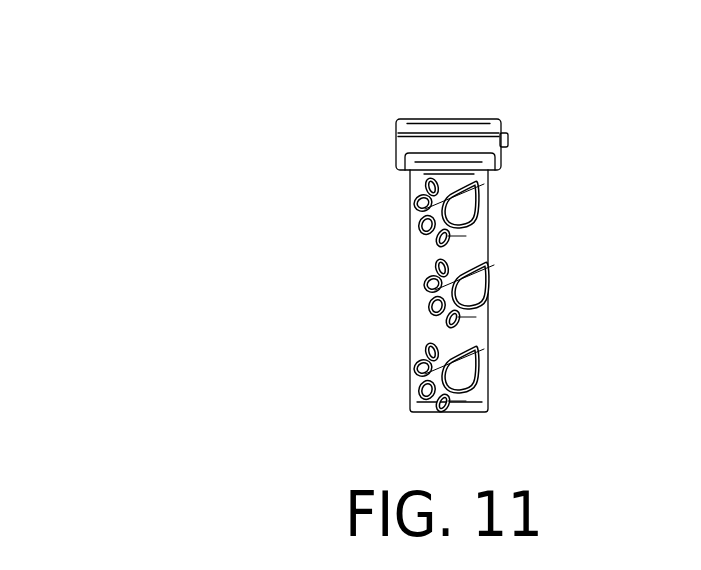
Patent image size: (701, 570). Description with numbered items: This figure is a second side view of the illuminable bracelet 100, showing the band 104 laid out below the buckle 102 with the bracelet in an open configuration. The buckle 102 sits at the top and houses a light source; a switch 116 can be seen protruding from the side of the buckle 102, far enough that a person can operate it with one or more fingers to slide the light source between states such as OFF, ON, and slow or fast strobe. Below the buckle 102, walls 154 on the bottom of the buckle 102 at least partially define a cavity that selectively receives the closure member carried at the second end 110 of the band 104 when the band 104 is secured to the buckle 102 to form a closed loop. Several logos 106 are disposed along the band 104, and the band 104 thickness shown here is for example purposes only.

The illuminable bracelet 100 is at (166, 67).
The buckle 102 is at (445, 118).
The band 104 is at (490, 329).
The logos 106 is at (427, 313).
The second end 110 is at (422, 173).
The switch 116 is at (508, 140).
The walls 154 is at (497, 165).